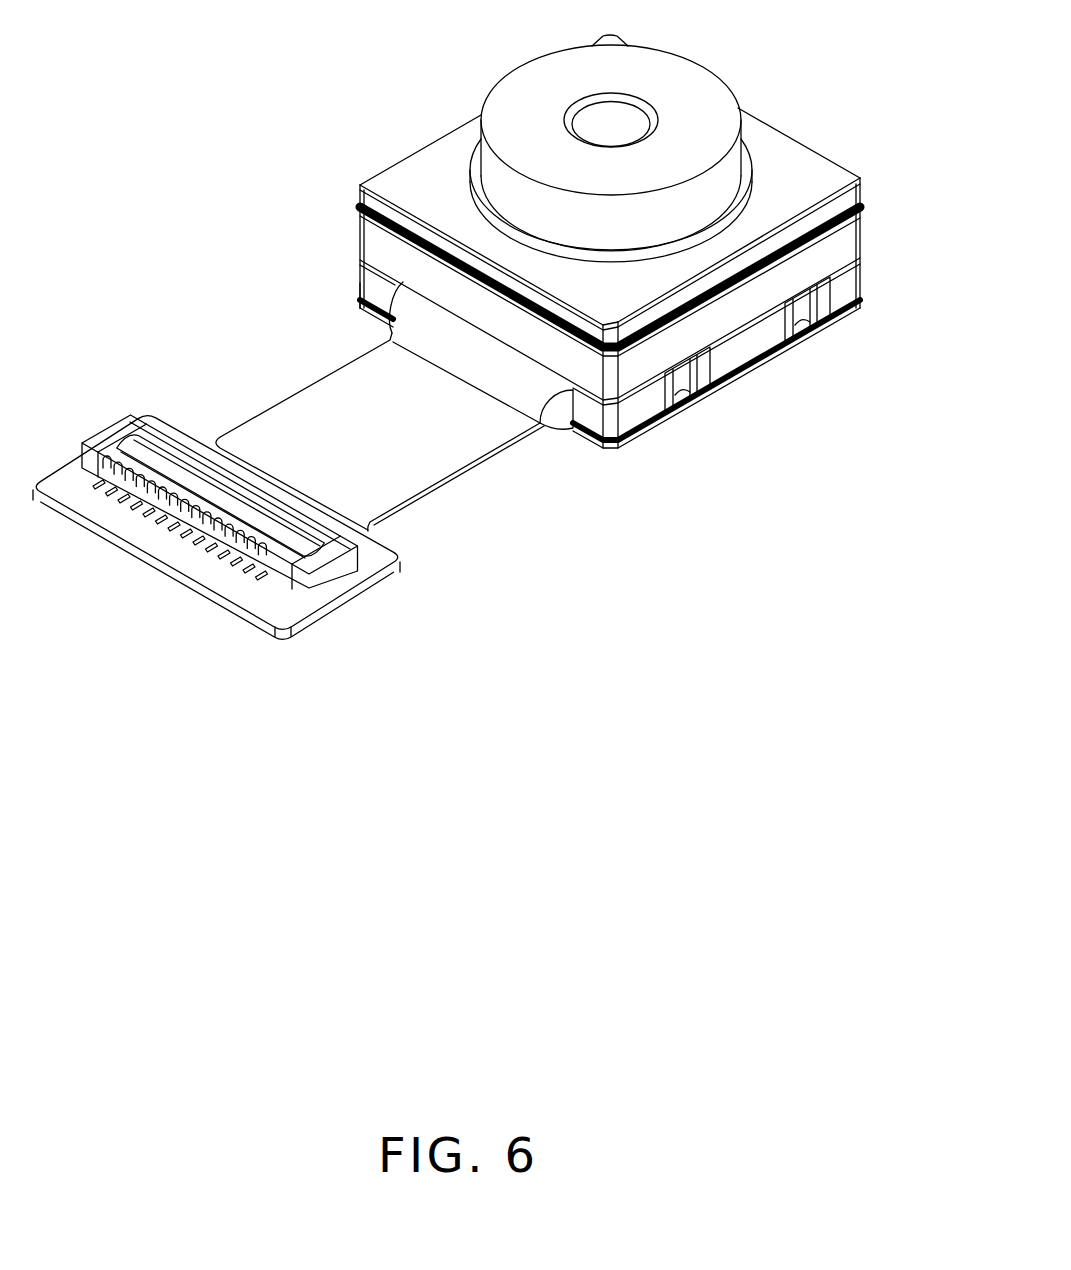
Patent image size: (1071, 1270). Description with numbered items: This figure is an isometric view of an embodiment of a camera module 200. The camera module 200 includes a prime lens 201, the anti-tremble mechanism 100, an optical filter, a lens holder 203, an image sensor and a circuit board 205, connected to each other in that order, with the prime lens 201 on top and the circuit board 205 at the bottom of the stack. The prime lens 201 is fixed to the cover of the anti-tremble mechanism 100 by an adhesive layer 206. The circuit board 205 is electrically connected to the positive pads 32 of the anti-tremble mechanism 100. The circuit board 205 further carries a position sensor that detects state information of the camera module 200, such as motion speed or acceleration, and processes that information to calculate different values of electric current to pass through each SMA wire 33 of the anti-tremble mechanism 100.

The camera module 200 is at (304, 82).
The prime lens 201 is at (688, 81).
The adhesive layer 206 is at (864, 199).
The anti-tremble mechanism 100 is at (851, 244).
The lens holder 203 is at (851, 285).
The positive pads 32 is at (682, 374).
The SMA wire 33 is at (798, 306).
The circuit board 205 is at (636, 433).